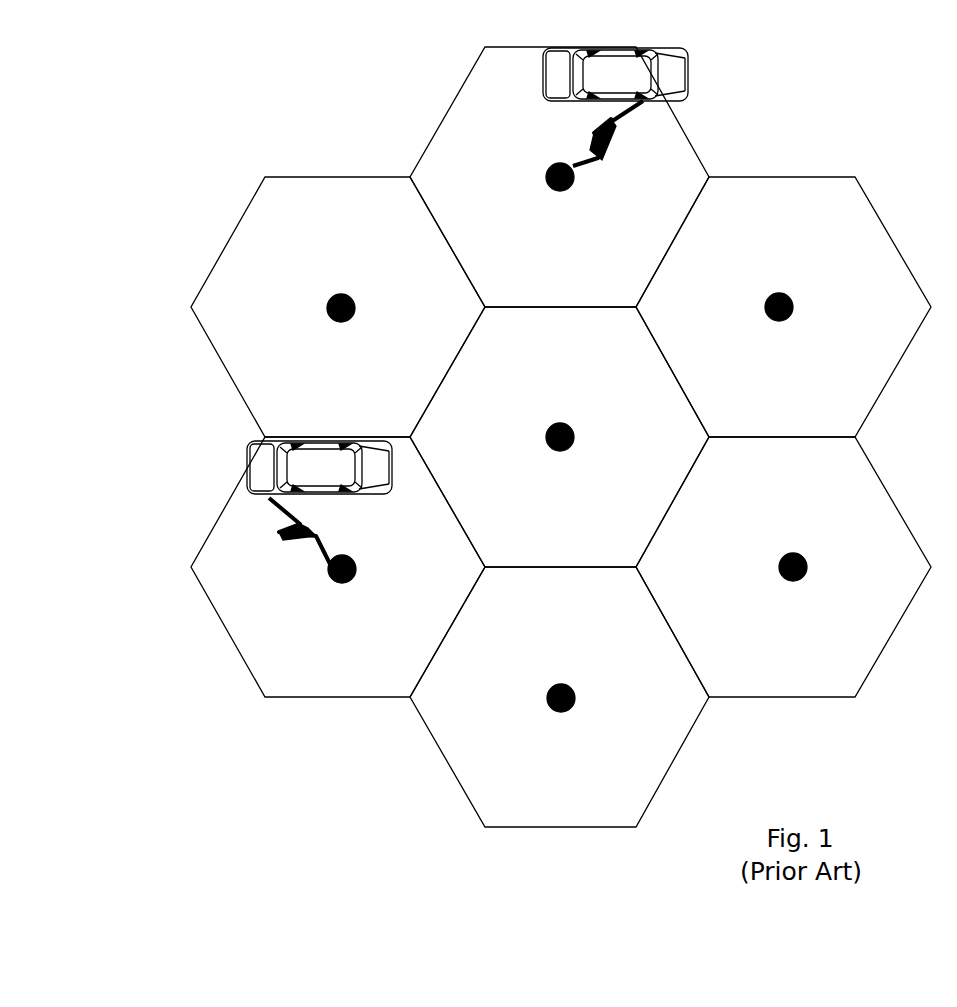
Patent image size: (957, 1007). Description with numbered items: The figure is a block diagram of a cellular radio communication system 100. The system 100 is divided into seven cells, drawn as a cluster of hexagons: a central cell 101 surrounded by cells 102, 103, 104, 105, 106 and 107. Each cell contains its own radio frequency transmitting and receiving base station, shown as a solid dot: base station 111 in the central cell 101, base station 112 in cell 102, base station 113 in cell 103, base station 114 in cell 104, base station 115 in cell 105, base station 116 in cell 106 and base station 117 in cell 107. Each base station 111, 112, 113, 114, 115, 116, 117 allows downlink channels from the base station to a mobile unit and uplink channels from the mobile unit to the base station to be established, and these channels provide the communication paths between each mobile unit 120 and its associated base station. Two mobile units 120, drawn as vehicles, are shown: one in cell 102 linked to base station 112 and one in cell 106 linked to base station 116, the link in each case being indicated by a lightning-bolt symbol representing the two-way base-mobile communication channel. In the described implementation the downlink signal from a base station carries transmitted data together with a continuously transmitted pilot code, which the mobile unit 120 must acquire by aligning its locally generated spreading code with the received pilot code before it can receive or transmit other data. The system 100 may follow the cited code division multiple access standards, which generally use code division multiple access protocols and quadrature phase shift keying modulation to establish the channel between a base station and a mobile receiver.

The system 100 is at (295, 108).
The cell 101 is at (580, 492).
The cell 102 is at (559, 177).
The cell 103 is at (783, 307).
The cell 104 is at (783, 567).
The cell 105 is at (580, 787).
The cell 106 is at (362, 645).
The cell 107 is at (322, 394).
The base station 111 is at (556, 419).
The base station 112 is at (546, 170).
The base station 113 is at (775, 287).
The base station 114 is at (790, 547).
The base station 115 is at (558, 680).
The base station 116 is at (362, 565).
The base station 117 is at (338, 288).
The mobile unit 120 is at (675, 70).